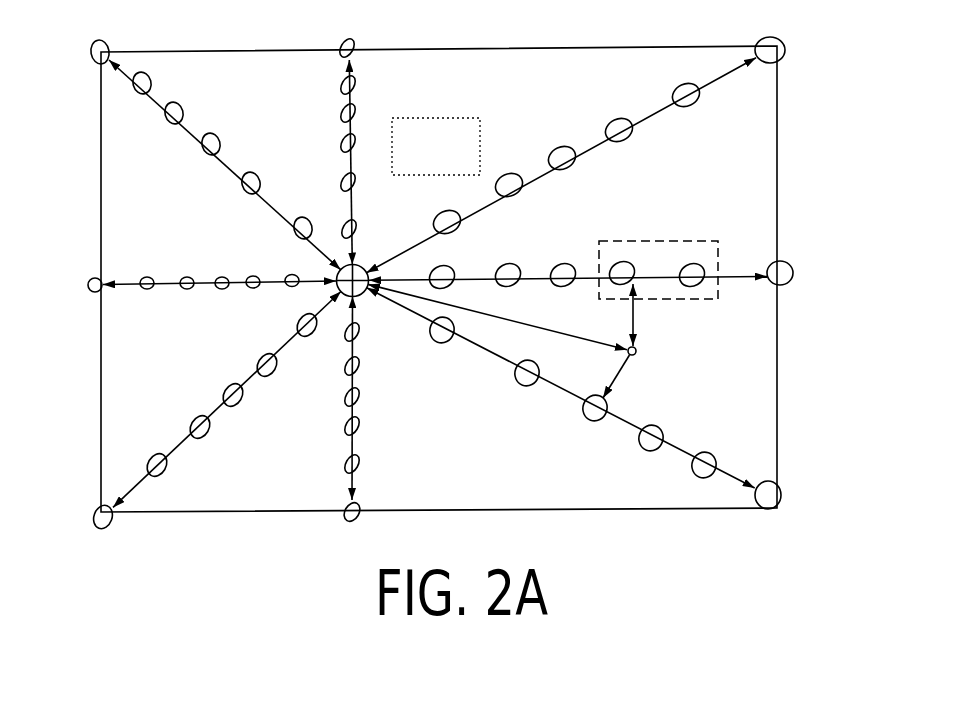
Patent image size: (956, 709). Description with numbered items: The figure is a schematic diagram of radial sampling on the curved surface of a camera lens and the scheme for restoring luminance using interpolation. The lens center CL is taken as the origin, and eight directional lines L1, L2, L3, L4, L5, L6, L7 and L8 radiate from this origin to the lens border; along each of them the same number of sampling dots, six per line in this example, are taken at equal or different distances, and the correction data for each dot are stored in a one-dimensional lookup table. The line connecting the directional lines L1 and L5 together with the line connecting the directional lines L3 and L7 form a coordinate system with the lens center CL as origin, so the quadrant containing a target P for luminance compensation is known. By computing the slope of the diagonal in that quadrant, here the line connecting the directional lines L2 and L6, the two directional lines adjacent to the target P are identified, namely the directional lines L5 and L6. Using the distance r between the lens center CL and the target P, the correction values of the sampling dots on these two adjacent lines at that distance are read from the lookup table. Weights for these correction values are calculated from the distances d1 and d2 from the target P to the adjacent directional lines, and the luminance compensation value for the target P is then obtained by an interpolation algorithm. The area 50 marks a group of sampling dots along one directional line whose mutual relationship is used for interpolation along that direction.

The directional line L1 is at (212, 272).
The directional line L2 is at (215, 154).
The directional line L3 is at (365, 150).
The directional line L4 is at (576, 155).
The directional line L5 is at (581, 271).
The directional line L6 is at (574, 398).
The directional line L7 is at (367, 411).
The directional line L8 is at (215, 412).
The lens center CL is at (417, 190).
The area 50 is at (688, 240).
The distance r is at (497, 316).
The target P is at (643, 356).
The distance d1 is at (650, 315).
The distance d2 is at (627, 378).